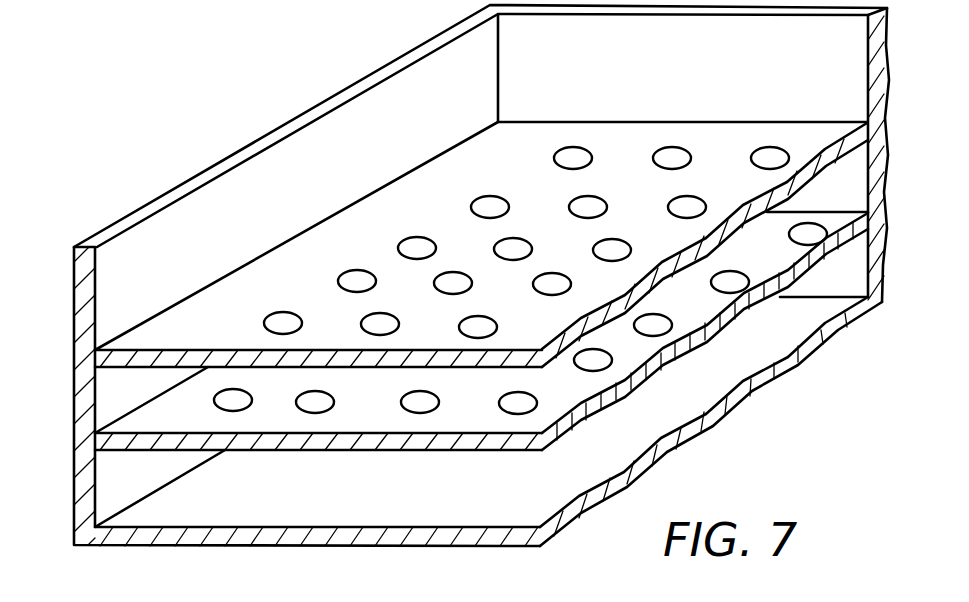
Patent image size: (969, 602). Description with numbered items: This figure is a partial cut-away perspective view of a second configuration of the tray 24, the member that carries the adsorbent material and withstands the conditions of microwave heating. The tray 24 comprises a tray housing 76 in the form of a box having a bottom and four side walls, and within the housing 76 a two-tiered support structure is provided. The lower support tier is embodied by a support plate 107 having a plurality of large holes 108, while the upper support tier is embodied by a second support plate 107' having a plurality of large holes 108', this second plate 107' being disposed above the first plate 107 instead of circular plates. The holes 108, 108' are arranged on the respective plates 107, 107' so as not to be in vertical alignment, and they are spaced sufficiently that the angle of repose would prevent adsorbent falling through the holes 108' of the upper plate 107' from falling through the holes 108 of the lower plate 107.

The tray 24 is at (457, 275).
The tray housing 76 is at (74, 372).
The support plate 107 is at (481, 210).
The second support plate 107' is at (481, 348).
The large holes 108 is at (526, 196).
The large holes 108' is at (536, 318).